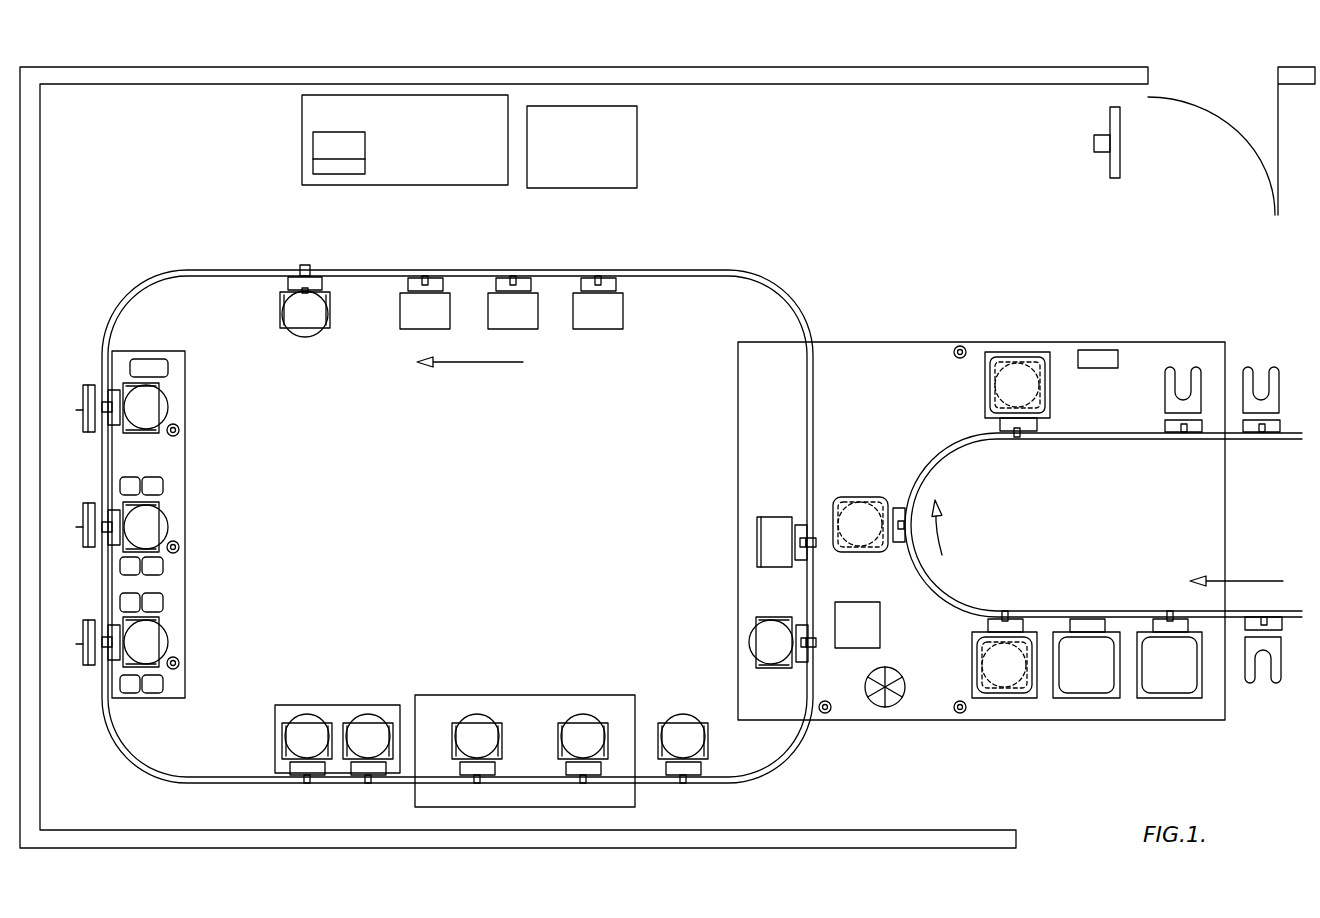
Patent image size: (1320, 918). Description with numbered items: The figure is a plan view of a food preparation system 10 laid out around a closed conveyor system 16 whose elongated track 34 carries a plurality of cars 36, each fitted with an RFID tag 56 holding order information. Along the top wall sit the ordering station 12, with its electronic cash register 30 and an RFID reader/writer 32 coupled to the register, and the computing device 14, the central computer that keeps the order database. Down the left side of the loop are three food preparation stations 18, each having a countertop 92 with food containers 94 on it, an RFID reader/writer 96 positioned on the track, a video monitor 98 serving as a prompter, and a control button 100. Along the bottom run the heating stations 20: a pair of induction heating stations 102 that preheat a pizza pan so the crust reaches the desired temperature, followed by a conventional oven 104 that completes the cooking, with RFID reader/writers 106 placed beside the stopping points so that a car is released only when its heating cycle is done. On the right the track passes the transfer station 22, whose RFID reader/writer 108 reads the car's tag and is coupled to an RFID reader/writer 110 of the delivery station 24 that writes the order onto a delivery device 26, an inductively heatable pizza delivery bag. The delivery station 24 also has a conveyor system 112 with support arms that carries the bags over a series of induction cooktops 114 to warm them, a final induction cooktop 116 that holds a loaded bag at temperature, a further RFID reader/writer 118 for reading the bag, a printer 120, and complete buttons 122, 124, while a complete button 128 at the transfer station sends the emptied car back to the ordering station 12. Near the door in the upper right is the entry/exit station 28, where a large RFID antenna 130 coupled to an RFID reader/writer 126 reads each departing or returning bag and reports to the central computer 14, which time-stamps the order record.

The food preparation system 10 is at (667, 457).
The ordering or point-of-sale station 12 is at (351, 144).
The computing device 14 is at (634, 143).
The conveyor system 16 is at (457, 496).
The food preparation station 18 is at (187, 514).
The heating or cooking station 20 is at (347, 719).
The transfer station 22 is at (977, 535).
The delivery station 24 is at (1084, 578).
The delivery device 26 is at (865, 496).
The entry/exit station 28 is at (1079, 180).
The electronic cash register 30 is at (362, 142).
The RFID reader/writer 32 is at (303, 265).
The elongated track 34 is at (457, 507).
The car 36 is at (440, 283).
The RFID tag 56 is at (296, 283).
The countertop 92 is at (178, 467).
The food container 94 is at (160, 357).
The RFID reader/writer 96 is at (106, 383).
The video monitor 98 is at (80, 412).
The control button 100 is at (180, 430).
The induction heating station 102 is at (337, 697).
The conventional oven 104 is at (527, 705).
The RFID reader/writer 106 is at (368, 785).
The RFID reader/writer 108 is at (817, 642).
The RFID reader/writer 110 is at (1005, 610).
The conveyor system 112 is at (1145, 612).
The induction cooktop 114 is at (980, 700).
The final induction cooktop 116 is at (984, 400).
The RFID reader/writer 118 is at (1018, 440).
The printer 120 is at (1102, 350).
The complete button 122 is at (956, 712).
The complete button 124 is at (958, 346).
The RFID reader/writer 126 is at (1077, 164).
The complete button 128 is at (827, 714).
The RFID antenna 130 is at (1110, 120).